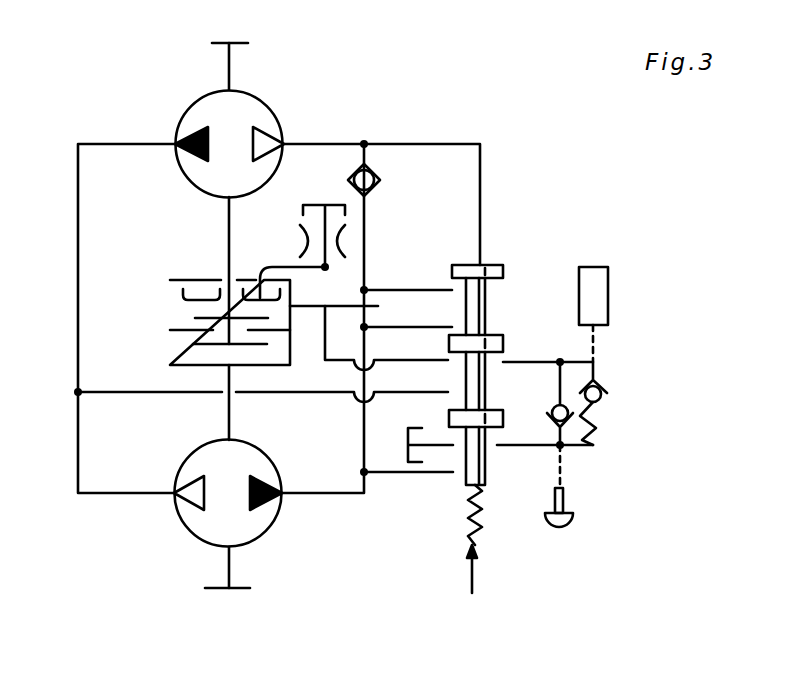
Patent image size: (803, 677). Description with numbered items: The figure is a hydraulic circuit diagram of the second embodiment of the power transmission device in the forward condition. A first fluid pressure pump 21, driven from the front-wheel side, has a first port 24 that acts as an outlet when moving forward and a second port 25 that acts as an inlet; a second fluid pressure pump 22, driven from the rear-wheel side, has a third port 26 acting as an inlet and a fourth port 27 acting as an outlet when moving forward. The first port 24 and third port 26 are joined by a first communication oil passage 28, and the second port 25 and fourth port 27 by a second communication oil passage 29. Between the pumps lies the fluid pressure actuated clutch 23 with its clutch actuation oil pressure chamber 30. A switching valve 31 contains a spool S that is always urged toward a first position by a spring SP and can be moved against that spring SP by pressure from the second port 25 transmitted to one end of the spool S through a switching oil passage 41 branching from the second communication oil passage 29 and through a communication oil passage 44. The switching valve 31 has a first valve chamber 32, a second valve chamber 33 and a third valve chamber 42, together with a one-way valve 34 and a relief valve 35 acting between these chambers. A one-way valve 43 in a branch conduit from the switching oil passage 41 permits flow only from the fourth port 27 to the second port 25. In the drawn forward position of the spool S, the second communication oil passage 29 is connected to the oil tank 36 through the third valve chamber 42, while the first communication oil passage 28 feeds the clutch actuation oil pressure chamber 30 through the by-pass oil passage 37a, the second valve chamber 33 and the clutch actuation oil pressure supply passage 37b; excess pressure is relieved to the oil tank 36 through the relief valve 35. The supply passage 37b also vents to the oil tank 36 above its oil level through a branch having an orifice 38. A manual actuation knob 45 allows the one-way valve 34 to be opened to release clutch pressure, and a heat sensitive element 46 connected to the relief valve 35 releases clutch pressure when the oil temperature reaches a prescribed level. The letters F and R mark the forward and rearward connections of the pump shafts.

The first fluid pressure pump 21 is at (262, 100).
The second fluid pressure pump 22 is at (262, 537).
The fluid pressure actuated clutch 23 is at (170, 308).
The first port 24 is at (175, 144).
The second port 25 is at (285, 142).
The third port 26 is at (173, 495).
The fourth port 27 is at (282, 497).
The first communication oil passage 28 is at (78, 257).
The second communication oil passage 29 is at (363, 433).
The clutch actuation oil pressure chamber 30 is at (200, 288).
The switching valve 31 is at (552, 247).
The first valve chamber 32 is at (488, 306).
The second valve chamber 33 is at (487, 376).
The one-way valve 34 is at (568, 418).
The relief valve 35 is at (602, 403).
The oil tank 36 is at (316, 205).
The by-pass oil passage 37a is at (177, 394).
The clutch actuation oil pressure supply passage 37b is at (388, 333).
The orifice 38 is at (335, 247).
The switching oil passage 41 is at (480, 190).
The third valve chamber 42 is at (486, 453).
The one-way valve 43 is at (381, 180).
The communication oil passage 44 is at (431, 288).
The manual actuation knob 45 is at (574, 524).
The heat sensitive element 46 is at (610, 300).
The spool S is at (498, 263).
The spring SP is at (472, 517).
The forward port F is at (230, 29).
The reverse port R is at (227, 603).